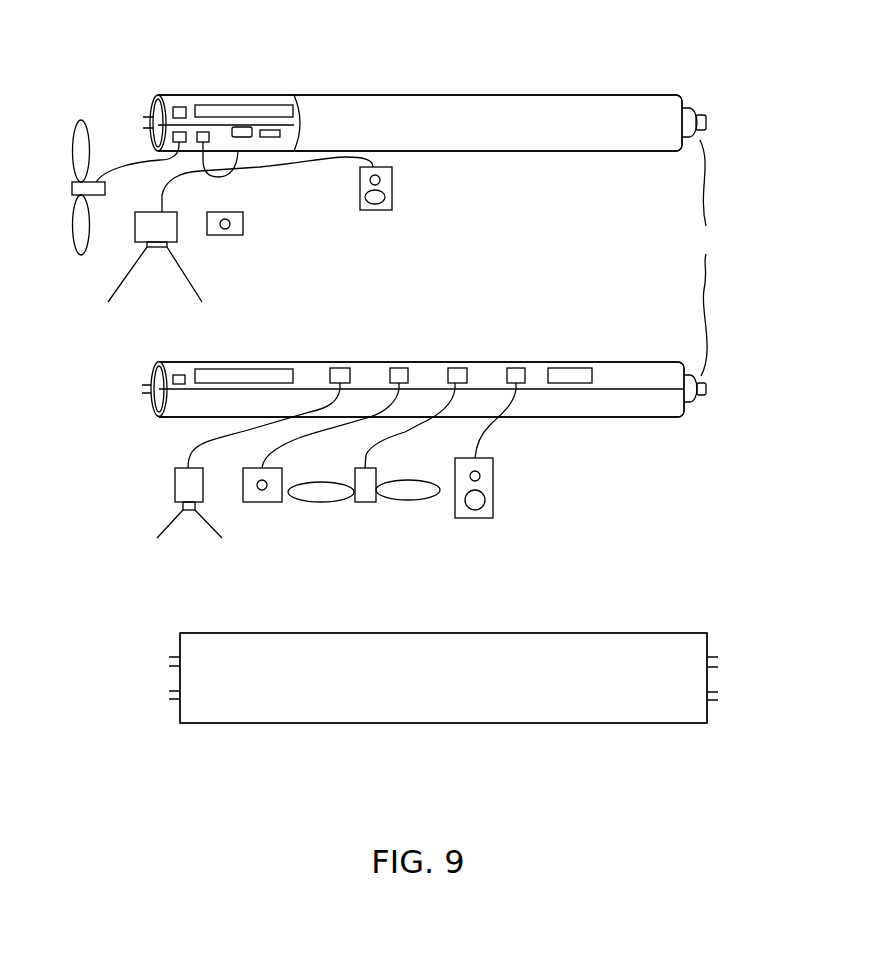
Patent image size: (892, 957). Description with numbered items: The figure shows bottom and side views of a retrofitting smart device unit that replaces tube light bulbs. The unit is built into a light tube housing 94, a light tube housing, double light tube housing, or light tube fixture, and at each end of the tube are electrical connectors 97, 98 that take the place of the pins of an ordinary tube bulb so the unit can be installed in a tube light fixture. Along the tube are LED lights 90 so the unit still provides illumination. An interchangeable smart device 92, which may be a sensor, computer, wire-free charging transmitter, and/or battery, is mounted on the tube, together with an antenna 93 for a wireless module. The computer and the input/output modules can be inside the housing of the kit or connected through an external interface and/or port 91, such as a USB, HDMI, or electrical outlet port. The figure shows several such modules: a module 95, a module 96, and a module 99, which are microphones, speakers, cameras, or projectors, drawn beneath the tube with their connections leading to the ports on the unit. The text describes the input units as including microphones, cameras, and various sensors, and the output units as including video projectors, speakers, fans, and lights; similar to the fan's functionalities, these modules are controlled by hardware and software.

The LED lights 90 is at (432, 110).
The external interface and/or port 91 is at (455, 366).
The interchangeable smart device 92 is at (183, 107).
The antenna for wireless module 93 is at (256, 104).
The light tube housing 94 is at (640, 157).
The microphone, speaker, camera, or projector module 95 is at (172, 234).
The microphone, speaker, camera, or projector module 96 is at (249, 224).
The electrical connector 97 is at (146, 103).
The electrical connector 98 is at (720, 695).
The microphone, speaker, camera, or projector module 99 is at (400, 184).